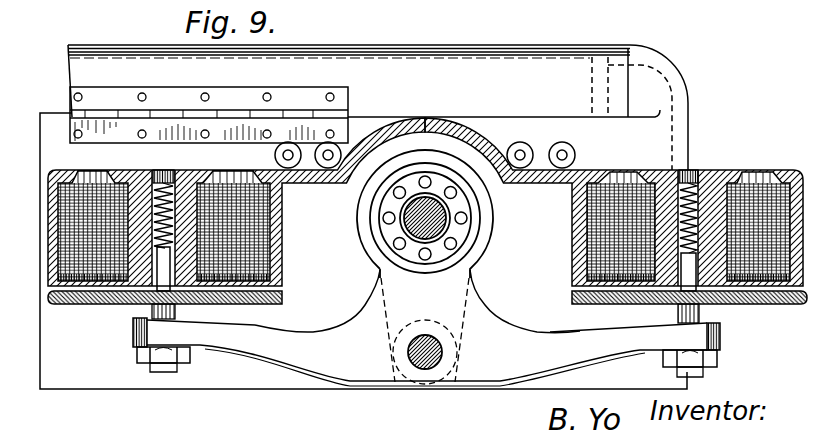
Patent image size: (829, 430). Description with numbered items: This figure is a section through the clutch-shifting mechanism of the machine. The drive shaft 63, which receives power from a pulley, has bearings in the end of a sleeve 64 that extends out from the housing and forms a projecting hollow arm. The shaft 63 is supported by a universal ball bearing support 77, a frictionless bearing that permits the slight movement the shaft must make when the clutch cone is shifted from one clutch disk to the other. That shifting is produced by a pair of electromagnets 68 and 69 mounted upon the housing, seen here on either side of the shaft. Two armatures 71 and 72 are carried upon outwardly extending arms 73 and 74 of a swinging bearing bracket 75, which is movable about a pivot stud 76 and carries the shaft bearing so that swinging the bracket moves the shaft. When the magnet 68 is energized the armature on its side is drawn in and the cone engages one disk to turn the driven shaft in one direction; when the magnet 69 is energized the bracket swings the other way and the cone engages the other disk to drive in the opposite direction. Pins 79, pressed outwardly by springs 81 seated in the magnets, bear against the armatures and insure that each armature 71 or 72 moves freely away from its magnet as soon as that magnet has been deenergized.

The shaft 63 is at (410, 222).
The sleeve 64 is at (370, 247).
The electromagnet 68 is at (55, 168).
The electromagnet 69 is at (720, 170).
The armature 71 is at (72, 305).
The armature 72 is at (760, 306).
The arm 73 is at (263, 365).
The arm 74 is at (556, 342).
The swinging bearing bracket 75 is at (450, 294).
The pivot stud 76 is at (420, 368).
The universal ball bearing support 77 is at (447, 228).
The pin 79 is at (196, 304).
The spring 81 is at (133, 305).